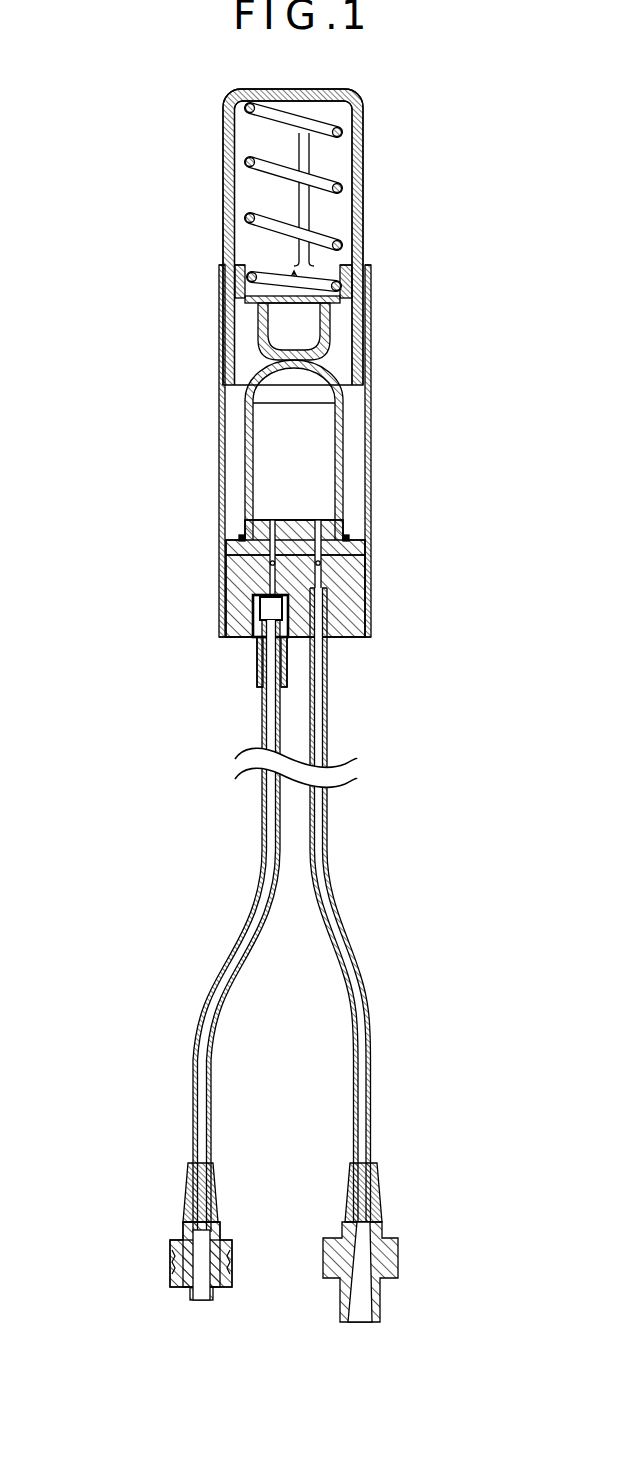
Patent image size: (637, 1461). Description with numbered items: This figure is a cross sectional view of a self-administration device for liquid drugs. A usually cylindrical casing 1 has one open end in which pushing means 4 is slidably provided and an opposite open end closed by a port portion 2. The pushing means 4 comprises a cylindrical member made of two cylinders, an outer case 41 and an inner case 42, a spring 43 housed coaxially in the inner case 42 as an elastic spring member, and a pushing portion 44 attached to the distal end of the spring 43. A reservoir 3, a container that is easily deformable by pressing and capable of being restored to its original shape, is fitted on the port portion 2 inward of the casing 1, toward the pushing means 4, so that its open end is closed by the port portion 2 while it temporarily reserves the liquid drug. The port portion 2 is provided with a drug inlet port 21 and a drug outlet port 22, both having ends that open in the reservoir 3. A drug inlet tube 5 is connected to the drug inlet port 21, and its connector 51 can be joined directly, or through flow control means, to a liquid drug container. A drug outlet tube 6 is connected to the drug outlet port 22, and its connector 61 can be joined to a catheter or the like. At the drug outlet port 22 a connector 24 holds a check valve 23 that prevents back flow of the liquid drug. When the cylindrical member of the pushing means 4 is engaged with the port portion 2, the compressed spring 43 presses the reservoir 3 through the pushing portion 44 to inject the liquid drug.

The casing 1 is at (343, 451).
The port portion 2 is at (292, 582).
The drug inlet port 21 is at (357, 549).
The drug outlet port 22 is at (232, 593).
The check valve 23 is at (192, 620).
The connector 24 is at (207, 676).
The reservoir 3 is at (357, 450).
The pushing means 4 is at (363, 230).
The outer case 41 is at (348, 237).
The inner case 42 is at (360, 243).
The spring 43 is at (214, 197).
The pushing portion 44 is at (372, 327).
The drug inlet tube 5 is at (374, 905).
The connector 51 is at (427, 1242).
The drug outlet tube 6 is at (209, 926).
The connector 61 is at (137, 1231).